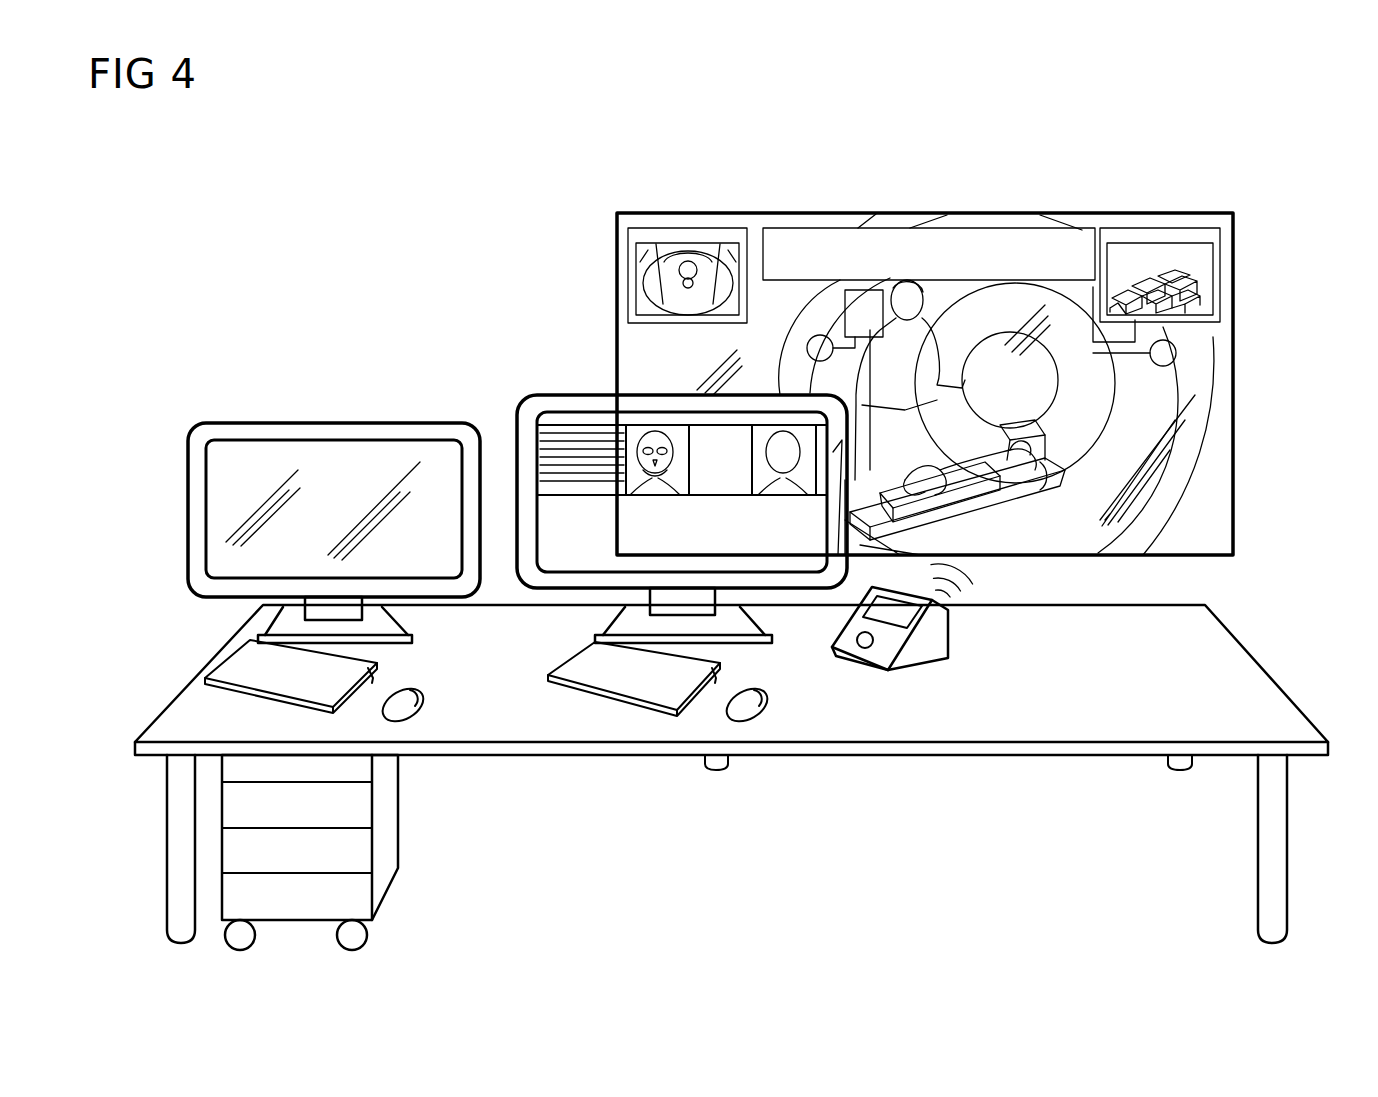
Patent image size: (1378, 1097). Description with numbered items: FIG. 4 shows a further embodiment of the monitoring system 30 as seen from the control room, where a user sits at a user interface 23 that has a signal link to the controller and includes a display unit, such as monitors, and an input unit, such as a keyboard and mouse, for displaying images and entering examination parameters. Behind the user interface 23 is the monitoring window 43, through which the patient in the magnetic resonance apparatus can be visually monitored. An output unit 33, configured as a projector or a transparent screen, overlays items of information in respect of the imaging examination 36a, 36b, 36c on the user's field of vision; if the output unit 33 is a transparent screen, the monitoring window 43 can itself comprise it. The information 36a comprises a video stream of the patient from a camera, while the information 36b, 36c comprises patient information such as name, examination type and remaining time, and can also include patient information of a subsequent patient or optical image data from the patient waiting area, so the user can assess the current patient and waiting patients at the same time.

The monitoring system 30 is at (1250, 158).
The item of information in respect of the imaging examination 36a is at (690, 238).
The item of information in respect of the imaging examination 36b is at (988, 238).
The item of information in respect of the imaging examination 36c is at (1155, 238).
The monitoring window 43 is at (1240, 490).
The user interface 23 is at (489, 708).
The output unit 33 is at (905, 686).